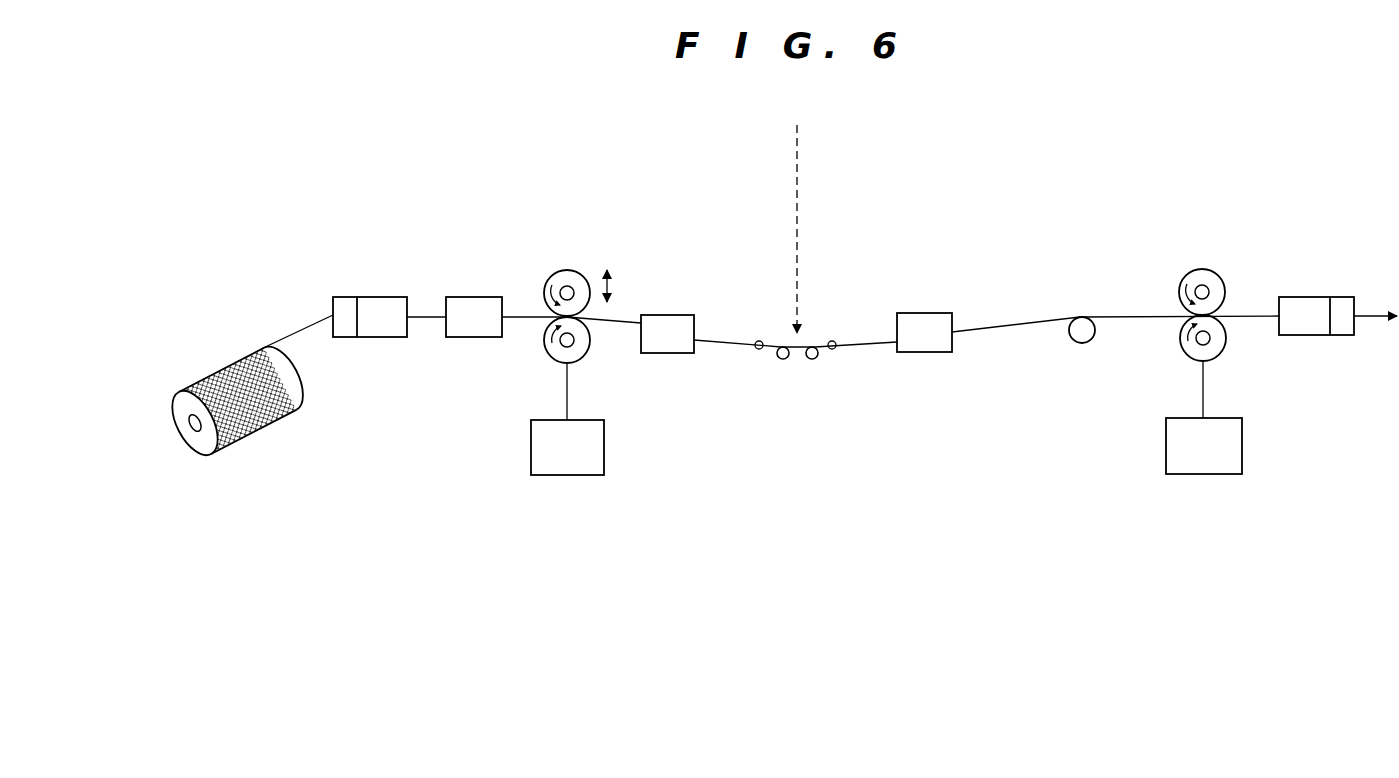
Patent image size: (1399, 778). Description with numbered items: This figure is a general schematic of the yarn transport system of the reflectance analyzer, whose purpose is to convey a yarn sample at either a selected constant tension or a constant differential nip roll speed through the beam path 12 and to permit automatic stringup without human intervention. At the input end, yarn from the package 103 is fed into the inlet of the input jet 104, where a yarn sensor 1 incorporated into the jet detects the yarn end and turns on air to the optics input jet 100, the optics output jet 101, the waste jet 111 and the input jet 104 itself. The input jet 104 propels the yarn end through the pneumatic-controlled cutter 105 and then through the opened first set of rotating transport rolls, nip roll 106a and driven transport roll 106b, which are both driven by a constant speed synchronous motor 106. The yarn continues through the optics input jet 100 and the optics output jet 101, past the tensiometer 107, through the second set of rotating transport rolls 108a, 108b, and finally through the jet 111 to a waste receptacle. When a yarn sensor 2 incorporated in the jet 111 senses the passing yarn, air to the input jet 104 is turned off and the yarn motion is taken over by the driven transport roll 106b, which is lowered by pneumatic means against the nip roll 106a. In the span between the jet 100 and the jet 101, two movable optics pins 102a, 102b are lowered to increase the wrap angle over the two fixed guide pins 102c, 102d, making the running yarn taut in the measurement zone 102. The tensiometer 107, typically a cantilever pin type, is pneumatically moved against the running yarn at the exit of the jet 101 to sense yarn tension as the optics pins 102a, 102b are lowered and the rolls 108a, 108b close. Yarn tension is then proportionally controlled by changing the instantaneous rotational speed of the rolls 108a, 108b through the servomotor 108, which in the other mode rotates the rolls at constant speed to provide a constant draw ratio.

The yarn sensor 1 is at (344, 327).
The yarn sensor 2 is at (1340, 330).
The optical axis / light beam 12 is at (799, 176).
The optics input jet 100 is at (663, 345).
The optics output jet 101 is at (918, 345).
The measurement zone 102 is at (806, 332).
The movable optics pin 102a is at (758, 340).
The movable optics pin 102b is at (832, 340).
The fixed guide pin 102c is at (780, 359).
The fixed guide pin 102d is at (816, 359).
The package 103 is at (246, 432).
The jet 104 is at (380, 330).
The pneumatic-controlled cutter 105 is at (476, 330).
The constant speed synchronous motor 106 is at (531, 462).
The nip roll 106a is at (571, 361).
The driven transport roll 106b is at (562, 276).
The tensiometer 107 is at (1073, 334).
The servomotor 108 is at (1166, 462).
The transport roll 108a is at (1192, 354).
The transport roll 108b is at (1200, 272).
The jet 111 is at (1300, 327).